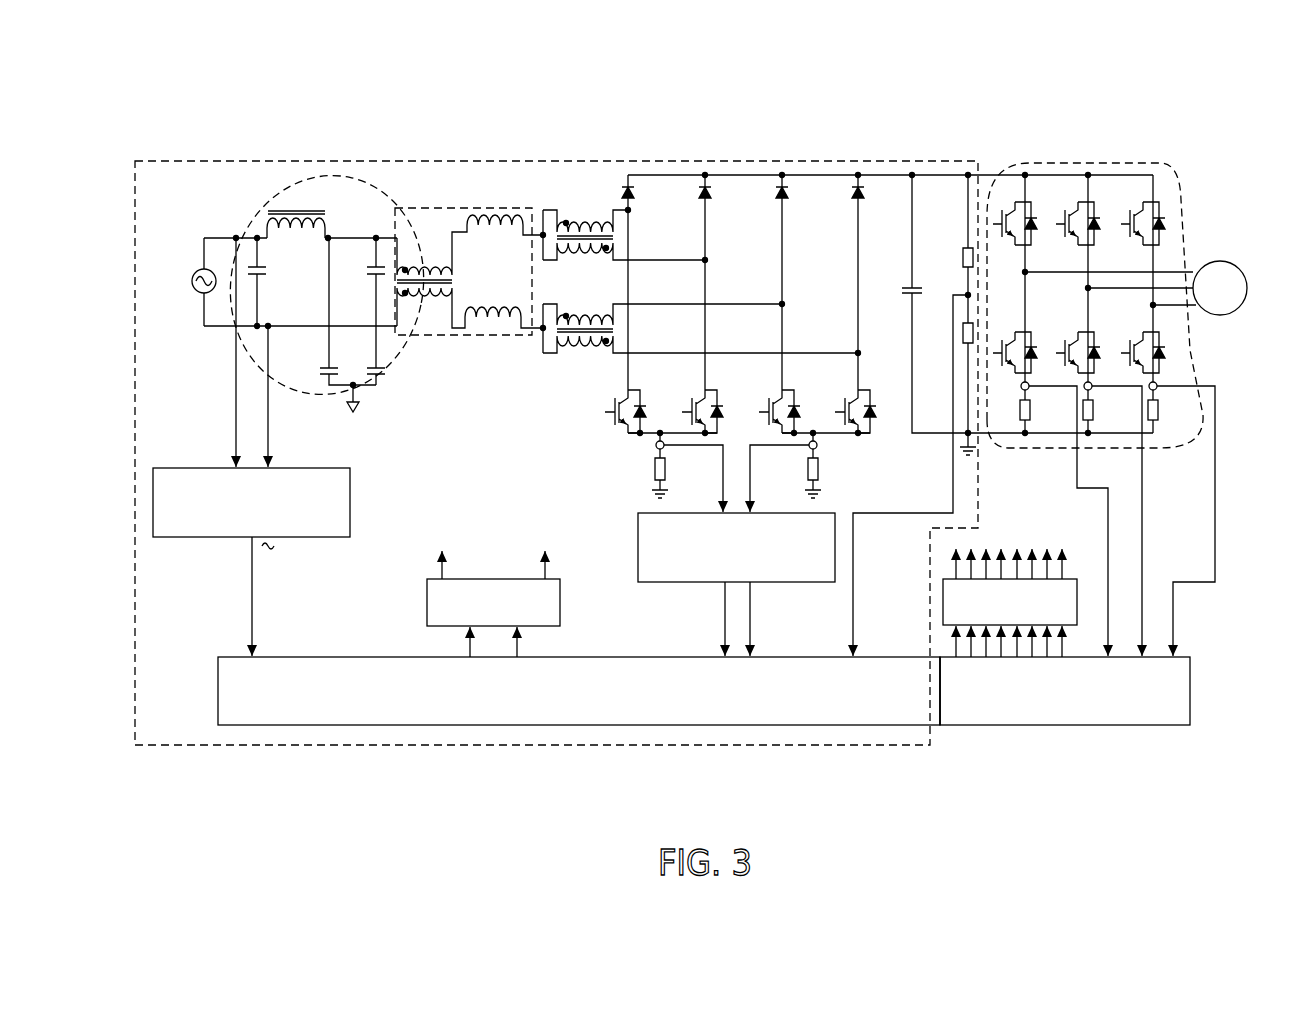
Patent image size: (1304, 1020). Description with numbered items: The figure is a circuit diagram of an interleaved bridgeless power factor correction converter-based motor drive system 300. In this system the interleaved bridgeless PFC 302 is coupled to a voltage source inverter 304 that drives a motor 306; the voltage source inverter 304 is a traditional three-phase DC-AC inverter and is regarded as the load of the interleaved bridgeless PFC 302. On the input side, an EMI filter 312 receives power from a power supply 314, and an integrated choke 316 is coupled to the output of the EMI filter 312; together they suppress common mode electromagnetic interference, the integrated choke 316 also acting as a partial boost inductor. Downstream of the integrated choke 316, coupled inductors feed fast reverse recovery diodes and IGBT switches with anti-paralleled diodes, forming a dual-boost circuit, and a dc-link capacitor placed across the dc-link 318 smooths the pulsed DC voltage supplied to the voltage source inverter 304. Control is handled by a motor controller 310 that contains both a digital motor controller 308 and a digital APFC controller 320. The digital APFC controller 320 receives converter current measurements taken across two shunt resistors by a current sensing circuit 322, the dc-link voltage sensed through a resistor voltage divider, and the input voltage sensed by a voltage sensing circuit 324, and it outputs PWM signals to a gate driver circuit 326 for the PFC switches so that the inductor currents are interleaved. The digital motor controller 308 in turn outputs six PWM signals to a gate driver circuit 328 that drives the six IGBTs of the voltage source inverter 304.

The interleaved bridgeless PFC converter-based motor drive system 300 is at (906, 86).
The interleaved bridgeless PFC 302 is at (568, 745).
The voltage source inverter 304 is at (1178, 186).
The motor 306 is at (1220, 261).
The digital motor controller 308 is at (1105, 725).
The motor controller 310 is at (941, 725).
The EMI filter 312 is at (228, 212).
The power supply 314 is at (203, 293).
The integrated choke 316 is at (502, 336).
The dc-link 318 is at (913, 175).
The digital APFC controller 320 is at (325, 657).
The current sensing circuit 322 is at (665, 583).
The voltage sensing circuit 324 is at (350, 492).
The gate driver circuit 326 is at (427, 595).
The gate driver circuit 328 is at (943, 583).